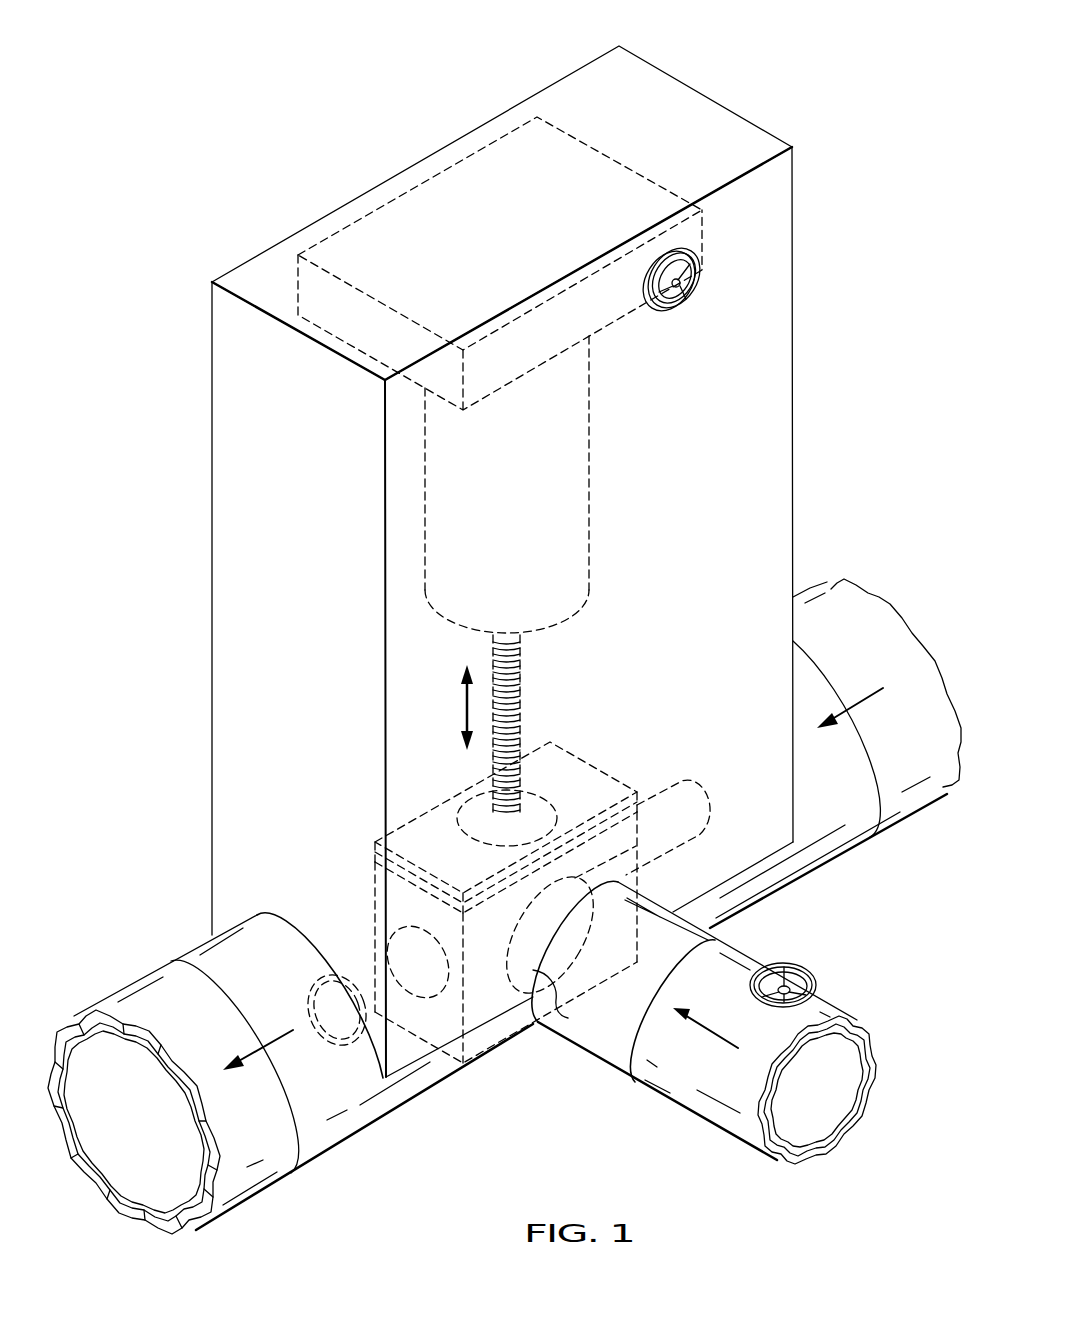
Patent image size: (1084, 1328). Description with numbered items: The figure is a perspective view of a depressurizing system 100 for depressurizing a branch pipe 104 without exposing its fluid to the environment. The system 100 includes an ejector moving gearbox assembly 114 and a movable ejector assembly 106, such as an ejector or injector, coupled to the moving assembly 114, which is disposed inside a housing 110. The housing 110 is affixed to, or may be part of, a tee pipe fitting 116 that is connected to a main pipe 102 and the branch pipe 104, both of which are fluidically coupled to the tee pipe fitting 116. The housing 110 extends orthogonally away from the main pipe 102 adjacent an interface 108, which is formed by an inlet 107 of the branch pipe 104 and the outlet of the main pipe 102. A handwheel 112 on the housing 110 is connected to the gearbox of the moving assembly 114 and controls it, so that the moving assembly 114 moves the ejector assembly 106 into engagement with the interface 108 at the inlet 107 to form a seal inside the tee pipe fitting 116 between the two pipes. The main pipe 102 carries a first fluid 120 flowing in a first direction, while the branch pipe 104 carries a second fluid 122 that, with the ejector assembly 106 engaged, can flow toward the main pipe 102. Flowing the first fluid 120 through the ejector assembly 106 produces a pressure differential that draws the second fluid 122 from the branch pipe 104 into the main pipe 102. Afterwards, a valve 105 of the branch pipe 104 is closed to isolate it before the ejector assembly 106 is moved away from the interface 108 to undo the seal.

The depressurizing system 100 is at (316, 68).
The main pipe 102 is at (843, 855).
The branch pipe 104 is at (696, 1122).
The valve 105 is at (812, 968).
The ejector assembly 106 is at (607, 742).
The inlet 107 is at (600, 887).
The interface 108 is at (568, 1018).
The housing 110 is at (713, 87).
The handwheel 112 is at (673, 308).
The ejector moving gearbox assembly 114 is at (624, 476).
The tee pipe fitting 116 is at (276, 928).
The first fluid 120 is at (867, 700).
The second fluid 122 is at (710, 1034).